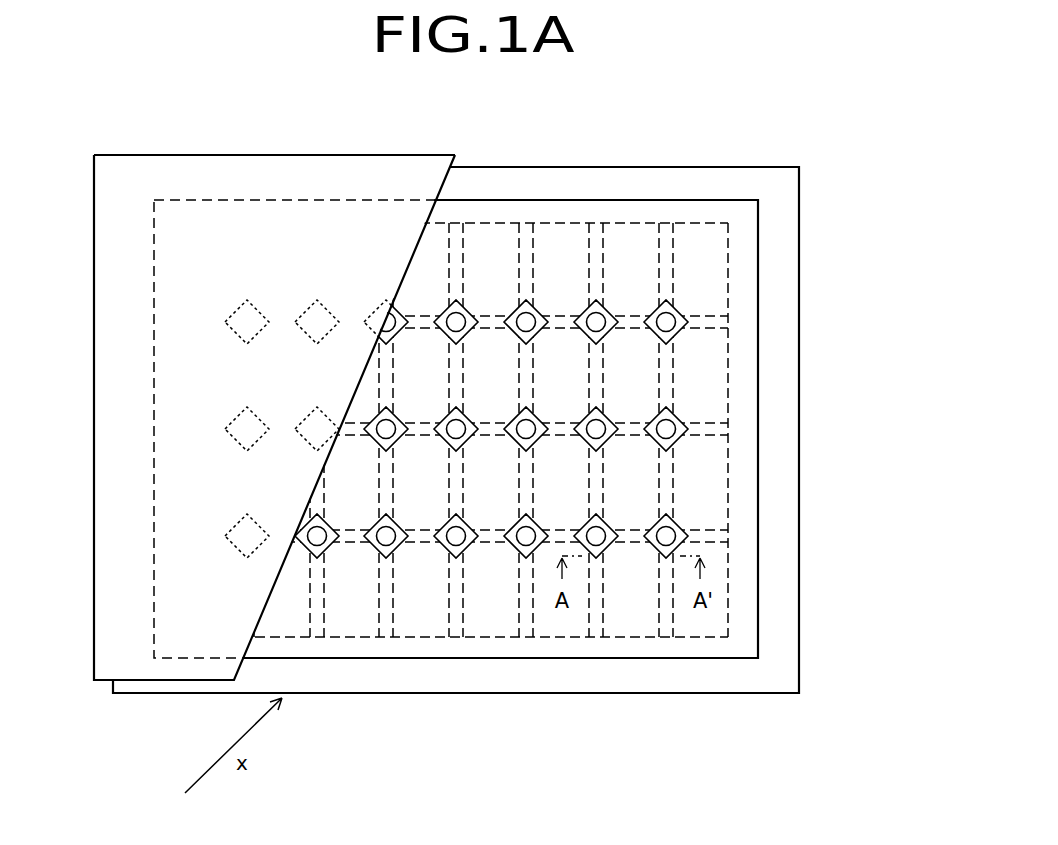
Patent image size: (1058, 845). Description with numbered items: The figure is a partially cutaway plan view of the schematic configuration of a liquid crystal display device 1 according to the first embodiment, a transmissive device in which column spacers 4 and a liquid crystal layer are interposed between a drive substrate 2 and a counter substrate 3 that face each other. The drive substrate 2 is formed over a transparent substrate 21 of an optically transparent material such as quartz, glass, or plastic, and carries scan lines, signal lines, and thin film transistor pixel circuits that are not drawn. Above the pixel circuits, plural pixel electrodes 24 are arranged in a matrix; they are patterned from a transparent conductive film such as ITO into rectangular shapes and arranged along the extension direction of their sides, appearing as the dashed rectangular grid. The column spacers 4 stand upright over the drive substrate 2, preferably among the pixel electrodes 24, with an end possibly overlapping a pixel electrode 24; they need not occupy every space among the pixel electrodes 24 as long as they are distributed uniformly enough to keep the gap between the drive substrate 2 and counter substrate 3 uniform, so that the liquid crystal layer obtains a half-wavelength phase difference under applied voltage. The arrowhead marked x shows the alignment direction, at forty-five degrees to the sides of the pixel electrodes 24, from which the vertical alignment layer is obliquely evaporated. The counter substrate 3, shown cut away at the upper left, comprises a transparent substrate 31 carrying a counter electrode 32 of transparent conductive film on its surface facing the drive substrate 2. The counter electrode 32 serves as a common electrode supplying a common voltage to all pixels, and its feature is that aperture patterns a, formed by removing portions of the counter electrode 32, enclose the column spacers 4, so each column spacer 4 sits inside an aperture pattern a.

The liquid crystal display device 1 is at (158, 107).
The drive substrate 2 is at (696, 160).
The transparent substrate 21 is at (760, 166).
The pixel electrode 24 is at (628, 713).
The counter substrate 3 is at (265, 150).
The transparent substrate 31 is at (325, 154).
The counter electrode 32 is at (505, 200).
The column spacer 4 is at (687, 353).
The aperture pattern a is at (701, 275).